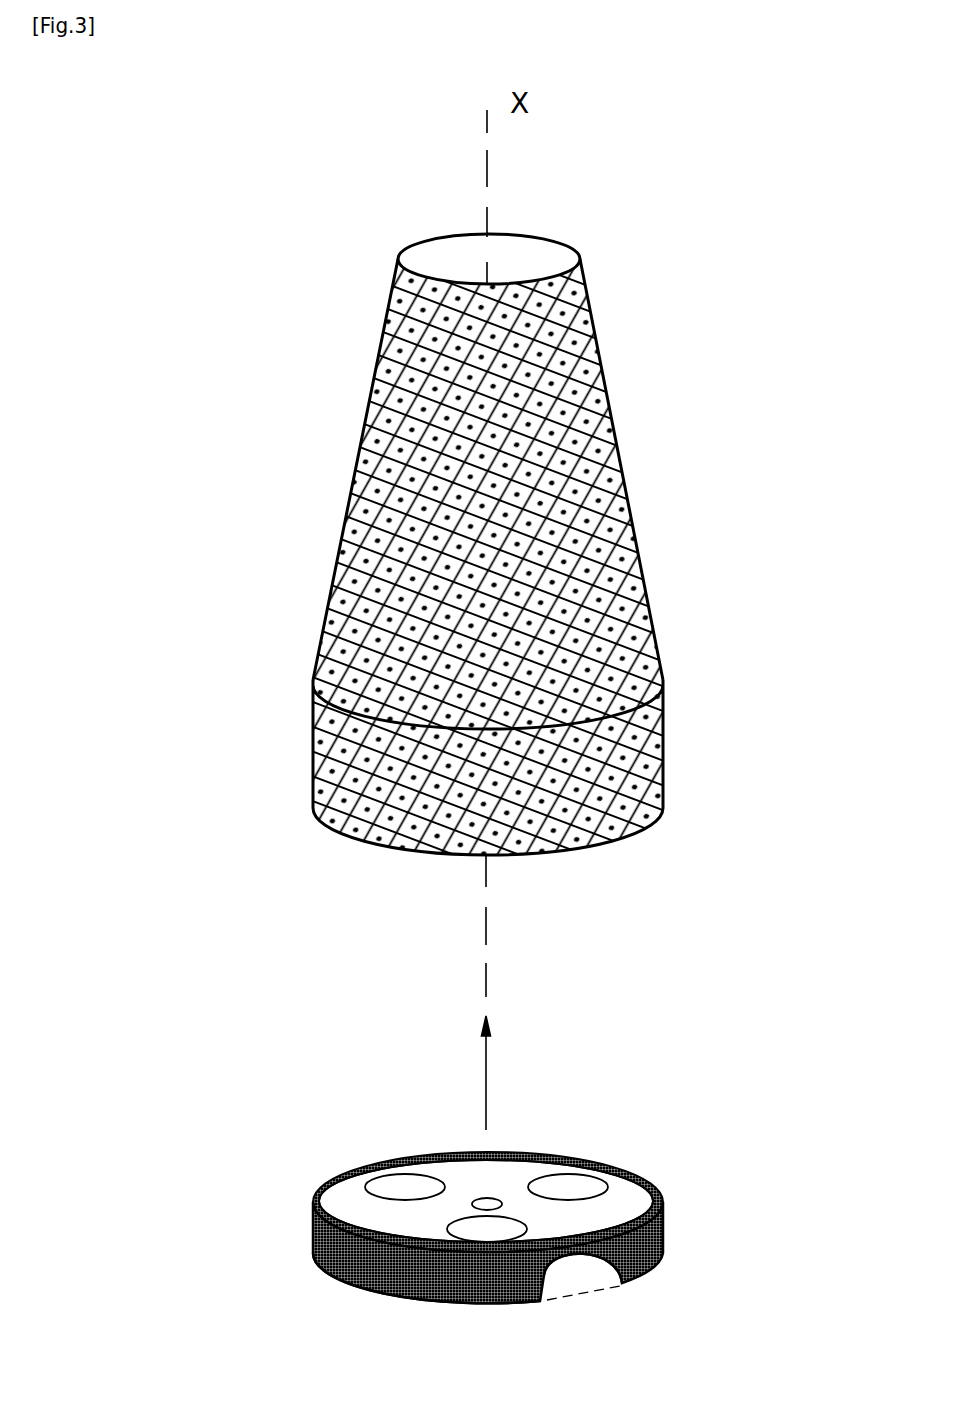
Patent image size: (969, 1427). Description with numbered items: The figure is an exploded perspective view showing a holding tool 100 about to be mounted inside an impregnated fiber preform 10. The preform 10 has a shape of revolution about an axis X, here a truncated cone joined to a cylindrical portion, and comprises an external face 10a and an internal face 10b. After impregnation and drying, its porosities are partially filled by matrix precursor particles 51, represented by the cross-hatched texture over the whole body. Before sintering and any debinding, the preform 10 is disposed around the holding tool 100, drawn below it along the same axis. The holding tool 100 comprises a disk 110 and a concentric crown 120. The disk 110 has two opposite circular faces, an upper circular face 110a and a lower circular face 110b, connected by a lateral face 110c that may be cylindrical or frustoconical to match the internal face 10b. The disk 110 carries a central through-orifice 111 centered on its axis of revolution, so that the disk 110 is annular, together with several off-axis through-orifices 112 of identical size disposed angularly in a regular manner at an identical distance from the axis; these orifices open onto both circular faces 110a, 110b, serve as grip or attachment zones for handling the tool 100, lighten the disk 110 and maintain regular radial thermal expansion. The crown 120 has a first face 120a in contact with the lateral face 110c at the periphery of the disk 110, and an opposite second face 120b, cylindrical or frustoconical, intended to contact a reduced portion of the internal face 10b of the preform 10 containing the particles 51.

The fiber preform 10 is at (495, 540).
The external face 10a is at (580, 362).
The internal face 10b is at (545, 253).
The matrix precursor particles 51 is at (613, 580).
The holding tool 100 is at (486, 1217).
The disk 110 is at (512, 1217).
The upper circular face 110a is at (520, 1172).
The lower circular face 110b is at (495, 1303).
The lateral face 110c is at (577, 1277).
The through-orifice 111 is at (483, 1195).
The through-orifices 112 is at (567, 1185).
The crown 120 is at (421, 1264).
The first face 120a is at (313, 1202).
The second face 120b is at (313, 1238).